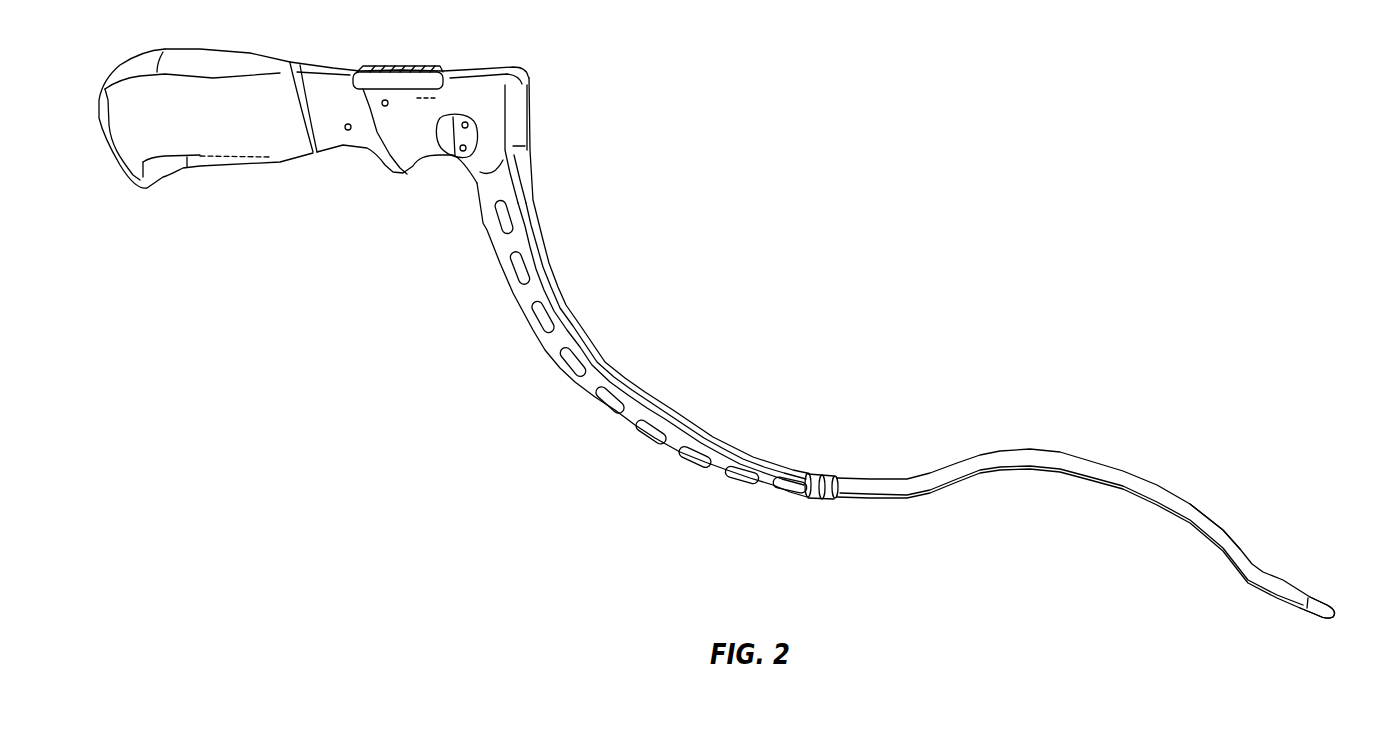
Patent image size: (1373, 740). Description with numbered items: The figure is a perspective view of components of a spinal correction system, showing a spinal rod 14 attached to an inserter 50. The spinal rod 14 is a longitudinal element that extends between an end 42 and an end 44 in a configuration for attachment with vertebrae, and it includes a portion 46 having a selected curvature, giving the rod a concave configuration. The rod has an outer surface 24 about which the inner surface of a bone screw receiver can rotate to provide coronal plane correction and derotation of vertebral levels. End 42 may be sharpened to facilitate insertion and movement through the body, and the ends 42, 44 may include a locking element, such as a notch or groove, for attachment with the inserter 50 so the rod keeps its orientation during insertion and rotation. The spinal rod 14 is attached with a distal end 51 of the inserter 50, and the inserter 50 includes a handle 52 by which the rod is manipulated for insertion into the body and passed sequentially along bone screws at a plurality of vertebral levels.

The spinal rod 14 is at (1222, 507).
The outer surface 24 is at (977, 455).
The end 42 is at (1318, 601).
The end 44 is at (838, 478).
The portion 46 is at (1100, 470).
The inserter 50 is at (549, 355).
The distal end 51 is at (767, 493).
The handle 52 is at (207, 148).